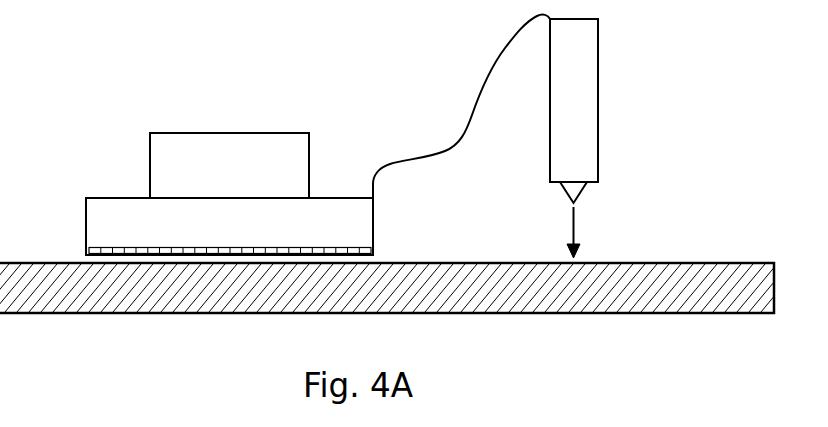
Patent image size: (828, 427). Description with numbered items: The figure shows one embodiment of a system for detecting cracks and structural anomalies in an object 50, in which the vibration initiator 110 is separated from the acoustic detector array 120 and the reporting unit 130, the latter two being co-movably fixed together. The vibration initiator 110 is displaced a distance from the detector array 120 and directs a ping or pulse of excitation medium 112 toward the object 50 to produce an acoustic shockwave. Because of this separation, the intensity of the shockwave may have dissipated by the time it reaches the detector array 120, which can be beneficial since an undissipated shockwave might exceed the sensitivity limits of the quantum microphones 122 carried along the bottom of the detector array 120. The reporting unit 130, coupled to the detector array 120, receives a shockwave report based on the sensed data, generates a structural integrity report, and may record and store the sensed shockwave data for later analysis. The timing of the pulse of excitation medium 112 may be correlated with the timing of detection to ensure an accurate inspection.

The object 50 is at (477, 296).
The vibration initiator 110 is at (593, 120).
The excitation medium 112 is at (575, 221).
The acoustic detector array 120 is at (256, 234).
The quantum microphones 122 is at (86, 254).
The reporting unit 130 is at (250, 190).